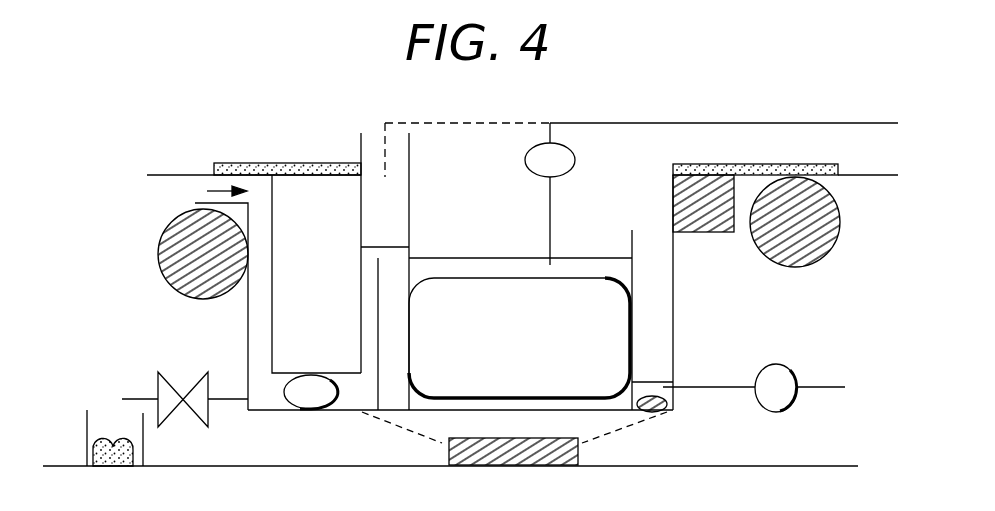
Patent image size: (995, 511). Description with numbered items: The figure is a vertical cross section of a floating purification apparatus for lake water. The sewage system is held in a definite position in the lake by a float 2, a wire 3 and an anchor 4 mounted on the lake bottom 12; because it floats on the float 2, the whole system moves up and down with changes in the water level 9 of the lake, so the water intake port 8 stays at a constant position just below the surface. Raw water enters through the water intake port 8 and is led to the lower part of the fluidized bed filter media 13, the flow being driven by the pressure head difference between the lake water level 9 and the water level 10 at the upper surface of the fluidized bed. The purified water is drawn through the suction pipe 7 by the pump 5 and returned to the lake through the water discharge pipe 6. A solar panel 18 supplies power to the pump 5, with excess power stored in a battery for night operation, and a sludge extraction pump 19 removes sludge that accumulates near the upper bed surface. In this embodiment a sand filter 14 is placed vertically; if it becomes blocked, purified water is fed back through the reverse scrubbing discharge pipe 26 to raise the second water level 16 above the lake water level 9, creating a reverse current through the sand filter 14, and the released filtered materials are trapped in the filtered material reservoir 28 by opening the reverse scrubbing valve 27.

The float 2 is at (160, 233).
The wire 3 is at (628, 428).
The anchor 4 is at (449, 447).
The pump 5 is at (525, 158).
The water discharge pipe 6 is at (567, 123).
The suction pipe 7 is at (545, 217).
The water intake port 8 is at (195, 192).
The water level of the lake waters 9 is at (165, 175).
The water level of the upper surface of the fluidized bed 10 is at (439, 258).
The lake bottom 12 is at (718, 465).
The fluidized bed filter media 13 is at (577, 277).
The sand filter 14 is at (313, 373).
The second water level 16 is at (377, 246).
The solar panel 18 is at (238, 163).
The sludge extraction pump 19 is at (797, 383).
The reverse scrubbing discharge pipe 26 is at (448, 122).
The reverse scrubbing valve 27 is at (174, 387).
The filtered material reservoir 28 is at (87, 424).